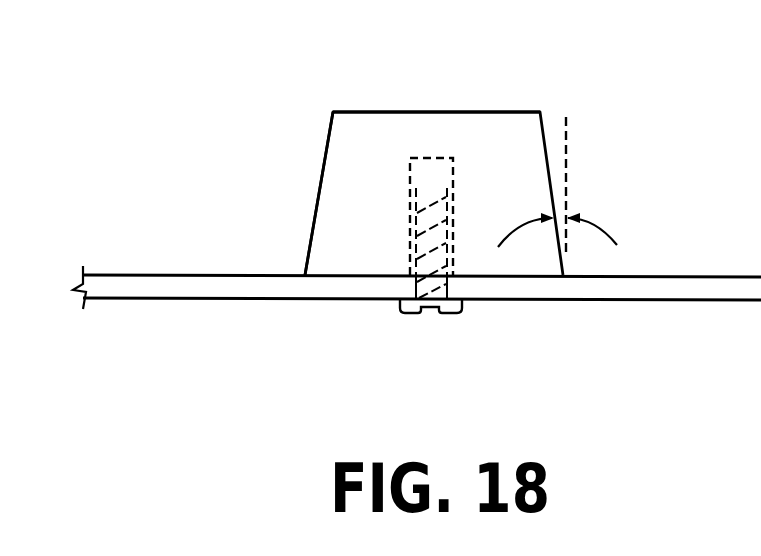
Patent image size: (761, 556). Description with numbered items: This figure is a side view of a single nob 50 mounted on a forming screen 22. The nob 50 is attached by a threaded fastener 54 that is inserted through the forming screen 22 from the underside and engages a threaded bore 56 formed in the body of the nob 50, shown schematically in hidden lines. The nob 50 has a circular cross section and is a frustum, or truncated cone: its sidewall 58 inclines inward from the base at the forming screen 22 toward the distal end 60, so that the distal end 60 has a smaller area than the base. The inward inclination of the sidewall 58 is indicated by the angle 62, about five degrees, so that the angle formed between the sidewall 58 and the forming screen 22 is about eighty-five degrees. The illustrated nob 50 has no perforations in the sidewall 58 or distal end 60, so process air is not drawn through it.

The forming screen 22 is at (222, 298).
The nob 50 is at (355, 158).
The threaded fastener 54 is at (404, 313).
The threaded bore 56 is at (453, 158).
The sidewall surface 58 is at (318, 203).
The distal end 60 is at (397, 112).
The angle 62 is at (572, 212).